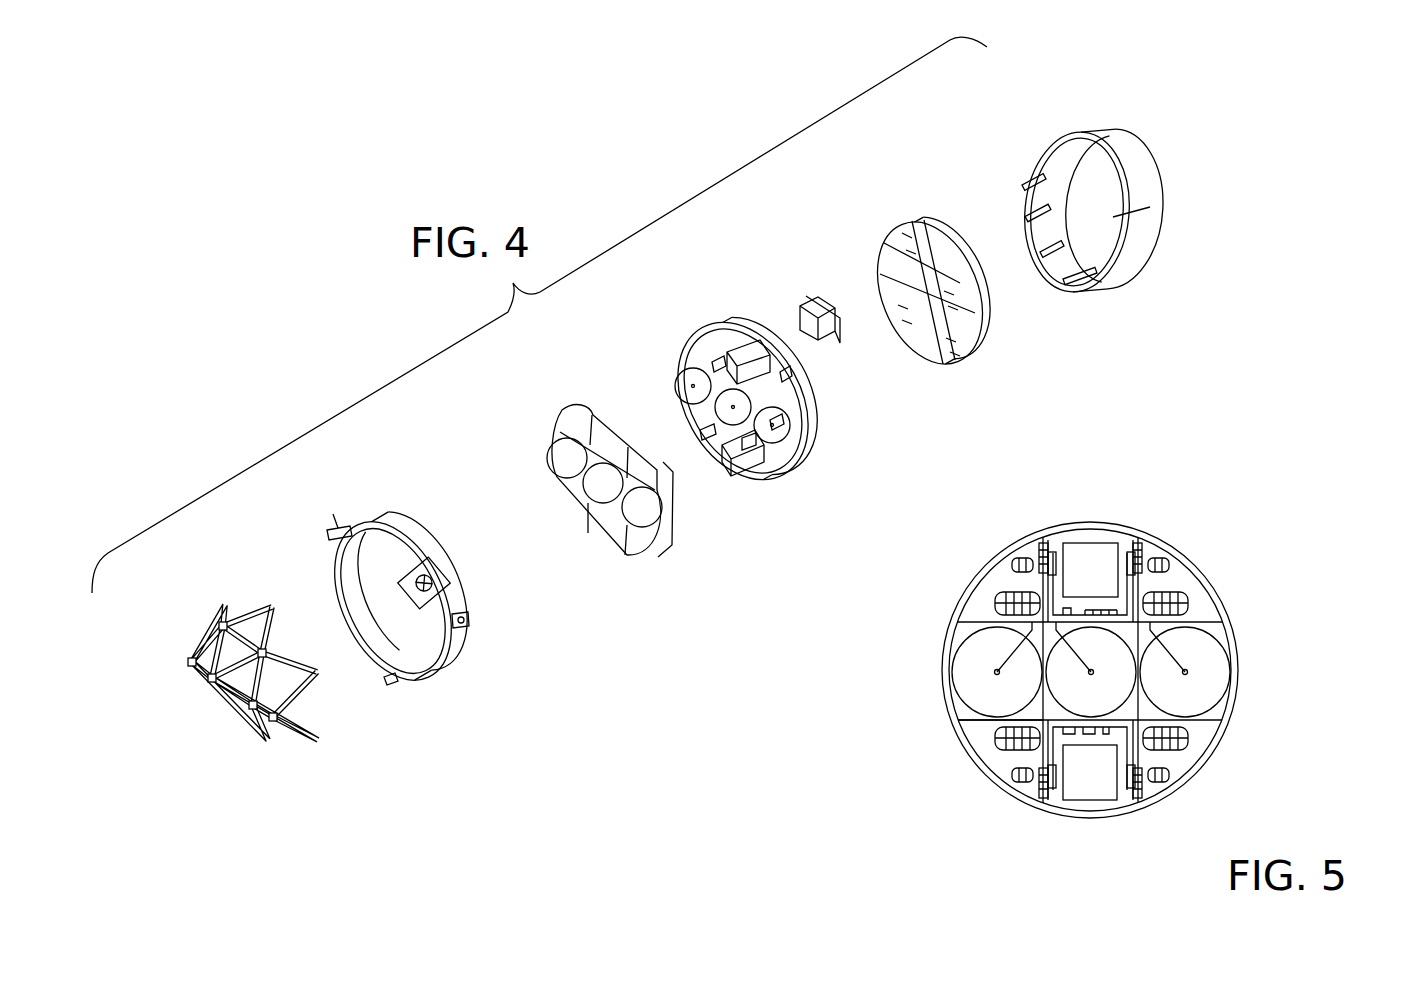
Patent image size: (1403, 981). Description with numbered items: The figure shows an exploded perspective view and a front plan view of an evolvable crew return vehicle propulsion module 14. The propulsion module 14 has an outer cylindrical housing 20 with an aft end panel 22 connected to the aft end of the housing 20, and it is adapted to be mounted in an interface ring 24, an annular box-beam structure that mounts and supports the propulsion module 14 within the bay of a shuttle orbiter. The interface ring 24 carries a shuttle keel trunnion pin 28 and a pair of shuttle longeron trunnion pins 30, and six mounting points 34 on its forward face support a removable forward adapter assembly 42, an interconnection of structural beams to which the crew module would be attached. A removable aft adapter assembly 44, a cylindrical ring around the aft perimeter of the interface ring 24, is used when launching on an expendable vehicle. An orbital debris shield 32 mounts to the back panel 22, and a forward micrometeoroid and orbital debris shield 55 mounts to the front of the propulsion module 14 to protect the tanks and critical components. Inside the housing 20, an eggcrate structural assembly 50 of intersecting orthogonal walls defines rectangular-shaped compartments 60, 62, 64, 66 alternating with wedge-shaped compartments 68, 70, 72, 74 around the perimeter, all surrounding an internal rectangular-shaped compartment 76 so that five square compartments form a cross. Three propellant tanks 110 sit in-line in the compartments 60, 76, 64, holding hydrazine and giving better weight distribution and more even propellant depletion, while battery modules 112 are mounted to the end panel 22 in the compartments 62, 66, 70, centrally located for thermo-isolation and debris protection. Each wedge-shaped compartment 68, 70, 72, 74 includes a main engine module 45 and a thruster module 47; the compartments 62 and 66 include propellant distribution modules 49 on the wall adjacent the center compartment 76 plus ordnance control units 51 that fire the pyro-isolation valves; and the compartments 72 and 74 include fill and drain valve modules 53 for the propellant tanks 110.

In FIG. 4, the propulsion module 14 is at (1090, 410).
In FIG. 5, the propulsion module 14 is at (1262, 494).
In FIG. 4, the outer cylindrical housing 20 is at (798, 433).
In FIG. 5, the outer cylindrical housing 20 is at (1163, 535).
In FIG. 4, the aft end panel 22 is at (742, 358).
In FIG. 4, the interface ring 24 is at (460, 666).
In FIG. 4, the shuttle keel trunnion pin 28 is at (392, 682).
In FIG. 4, the shuttle longeron trunnion pins 30 is at (473, 619).
In FIG. 4, the orbital debris shield 32 is at (988, 349).
In FIG. 4, the mounting points 34 is at (408, 527).
In FIG. 4, the forward adapter assembly 42 is at (256, 606).
In FIG. 4, the aft adapter assembly 44 is at (1057, 139).
In FIG. 5, the main engine module 45 is at (995, 752).
In FIG. 5, the thruster module 47 is at (1005, 782).
In FIG. 5, the propellant distribution modules 49 is at (1208, 610).
In FIG. 4, the eggcrate structural assembly 50 is at (788, 404).
In FIG. 5, the eggcrate structural assembly 50 is at (1207, 728).
In FIG. 5, the ordnance control units 51 is at (1068, 551).
In FIG. 5, the fill and drain valve modules 53 is at (1036, 546).
In FIG. 4, the forward micrometeoroid and orbital debris shield 55 is at (673, 513).
In FIG. 5, the rectangular-shaped compartment 60 is at (960, 708).
In FIG. 5, the rectangular-shaped compartment 62 is at (1130, 805).
In FIG. 5, the rectangular-shaped compartment 64 is at (1220, 627).
In FIG. 5, the rectangular-shaped compartment 66 is at (1055, 547).
In FIG. 5, the wedge-shaped compartment 68 is at (970, 727).
In FIG. 5, the wedge-shaped compartment 70 is at (1183, 765).
In FIG. 5, the wedge-shaped compartment 72 is at (1136, 599).
In FIG. 5, the wedge-shaped compartment 74 is at (972, 604).
In FIG. 5, the internal rectangular-shaped compartment 76 is at (1127, 713).
In FIG. 4, the propellant tanks 110 is at (686, 383).
In FIG. 5, the propellant tanks 110 is at (964, 632).
In FIG. 4, the battery modules 112 is at (794, 293).
In FIG. 5, the battery modules 112 is at (1085, 802).